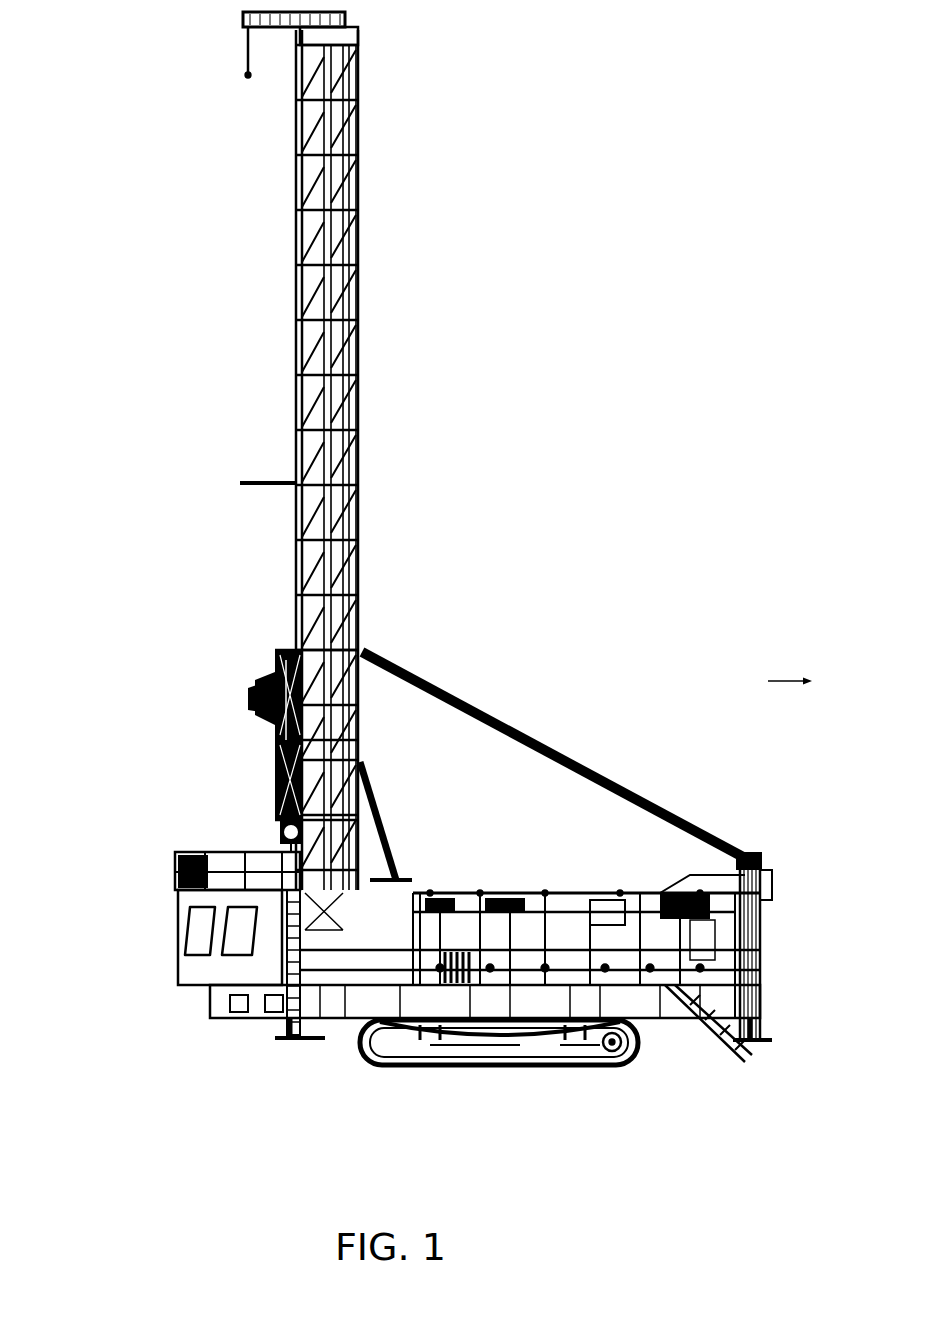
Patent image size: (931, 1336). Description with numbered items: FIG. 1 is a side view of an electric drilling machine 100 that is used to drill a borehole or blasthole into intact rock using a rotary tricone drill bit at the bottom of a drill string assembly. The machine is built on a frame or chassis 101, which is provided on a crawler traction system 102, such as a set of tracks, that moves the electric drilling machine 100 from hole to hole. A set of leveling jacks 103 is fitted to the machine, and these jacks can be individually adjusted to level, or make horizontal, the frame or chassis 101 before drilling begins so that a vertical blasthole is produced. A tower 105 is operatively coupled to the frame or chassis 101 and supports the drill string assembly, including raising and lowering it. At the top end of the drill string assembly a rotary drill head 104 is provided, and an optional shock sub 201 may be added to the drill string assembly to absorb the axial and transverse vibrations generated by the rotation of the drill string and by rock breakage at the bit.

The electric drilling machine 100 is at (731, 103).
The frame or chassis 101 is at (180, 1025).
The crawler traction system 102 is at (495, 1090).
The leveling jacks 103 is at (265, 1073).
The rotary drill head 104 is at (237, 751).
The tower 105 is at (237, 359).
The shock sub 201 is at (256, 830).